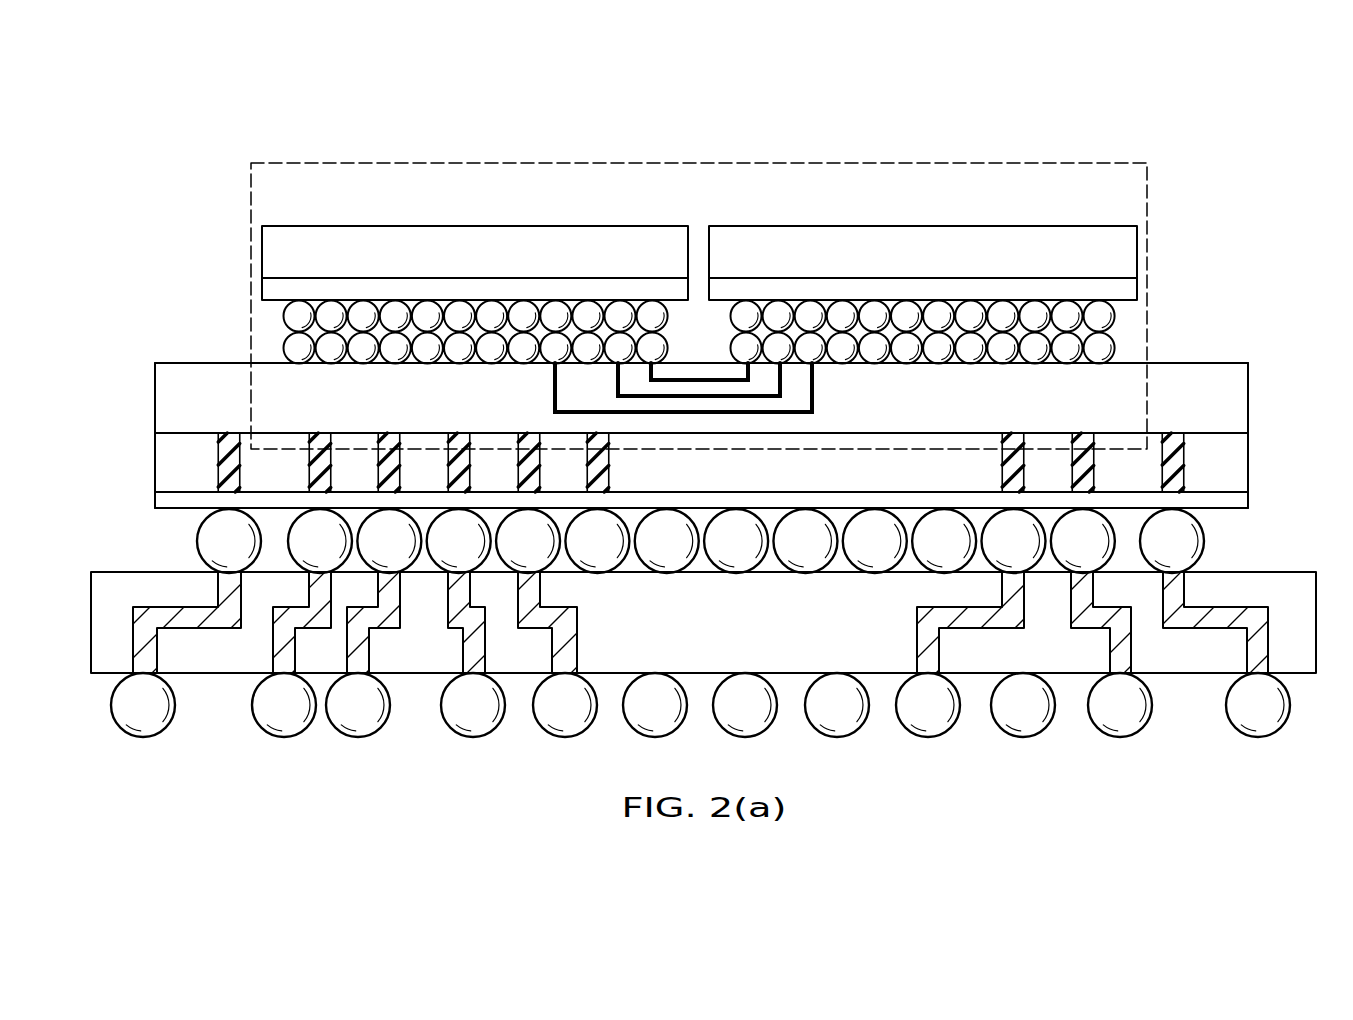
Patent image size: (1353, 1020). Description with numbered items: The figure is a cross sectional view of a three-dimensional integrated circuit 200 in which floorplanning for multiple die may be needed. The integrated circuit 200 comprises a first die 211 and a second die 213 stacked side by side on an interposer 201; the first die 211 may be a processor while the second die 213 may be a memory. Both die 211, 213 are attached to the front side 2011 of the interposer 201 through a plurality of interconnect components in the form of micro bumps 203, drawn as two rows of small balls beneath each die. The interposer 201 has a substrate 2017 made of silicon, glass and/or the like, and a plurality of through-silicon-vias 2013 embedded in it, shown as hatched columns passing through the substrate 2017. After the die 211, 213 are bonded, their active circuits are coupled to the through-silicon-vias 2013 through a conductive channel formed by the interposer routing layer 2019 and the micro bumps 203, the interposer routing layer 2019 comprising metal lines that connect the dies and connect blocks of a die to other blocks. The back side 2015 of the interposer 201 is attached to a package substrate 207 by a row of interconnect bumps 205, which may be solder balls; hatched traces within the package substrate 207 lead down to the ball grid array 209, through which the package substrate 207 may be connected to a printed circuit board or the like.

The 3D IC 200 is at (1082, 125).
The first die 211 is at (473, 233).
The second die 213 is at (923, 233).
The micro bumps 203 is at (284, 318).
The interposer 201 is at (150, 363).
The front side 2011 is at (1252, 363).
The through-silicon-vias 2013 is at (228, 442).
The interposer routing layer 2019 is at (812, 388).
The substrate 2017 is at (778, 480).
The back side 2015 is at (1240, 502).
The interconnect bumps 205 is at (199, 540).
The package substrate 207 is at (727, 636).
The ball grid array 209 is at (143, 729).